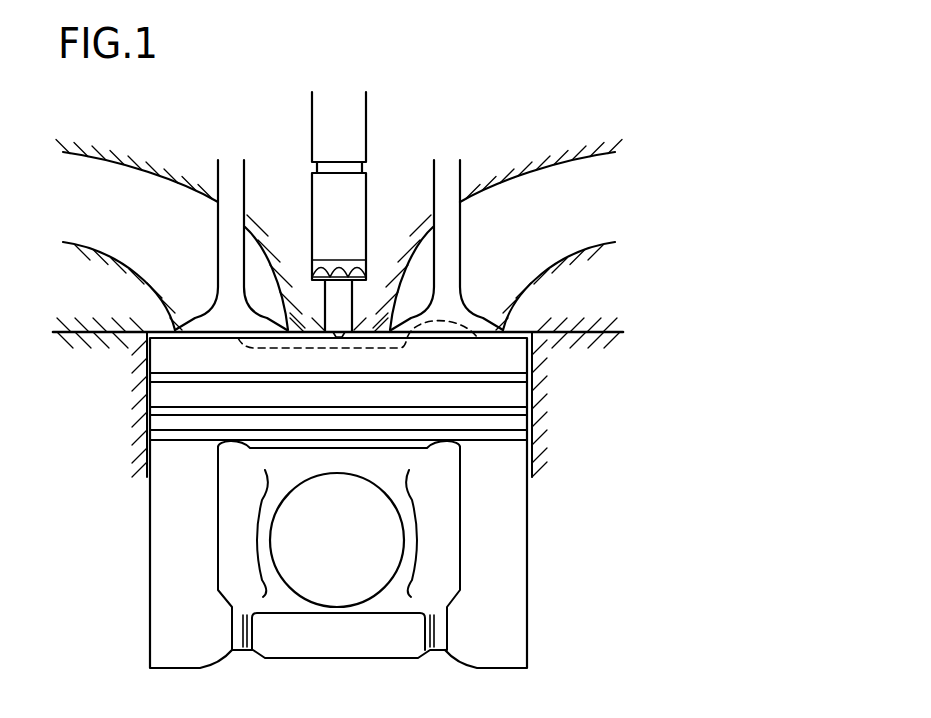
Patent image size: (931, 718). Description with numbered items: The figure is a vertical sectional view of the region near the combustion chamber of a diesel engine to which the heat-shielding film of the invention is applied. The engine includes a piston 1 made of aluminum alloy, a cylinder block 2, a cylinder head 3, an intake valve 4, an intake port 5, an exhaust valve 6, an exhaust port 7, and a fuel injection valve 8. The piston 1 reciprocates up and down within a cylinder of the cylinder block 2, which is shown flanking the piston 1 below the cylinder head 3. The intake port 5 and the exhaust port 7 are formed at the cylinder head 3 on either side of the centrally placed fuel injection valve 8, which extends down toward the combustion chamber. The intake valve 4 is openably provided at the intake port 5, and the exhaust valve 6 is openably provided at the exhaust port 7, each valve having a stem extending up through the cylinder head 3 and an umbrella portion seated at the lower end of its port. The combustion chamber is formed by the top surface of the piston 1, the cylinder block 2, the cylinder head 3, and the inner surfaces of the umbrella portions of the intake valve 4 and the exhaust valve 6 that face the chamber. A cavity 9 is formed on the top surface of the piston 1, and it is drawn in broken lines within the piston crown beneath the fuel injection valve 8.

The piston 1 is at (528, 575).
The cylinder block 2 is at (577, 333).
The cylinder head 3 is at (108, 338).
The intake valve 4 is at (451, 245).
The intake port 5 is at (495, 282).
The exhaust valve 6 is at (227, 245).
The exhaust port 7 is at (183, 282).
The fuel injection valve 8 is at (357, 117).
The cavity 9 is at (477, 337).